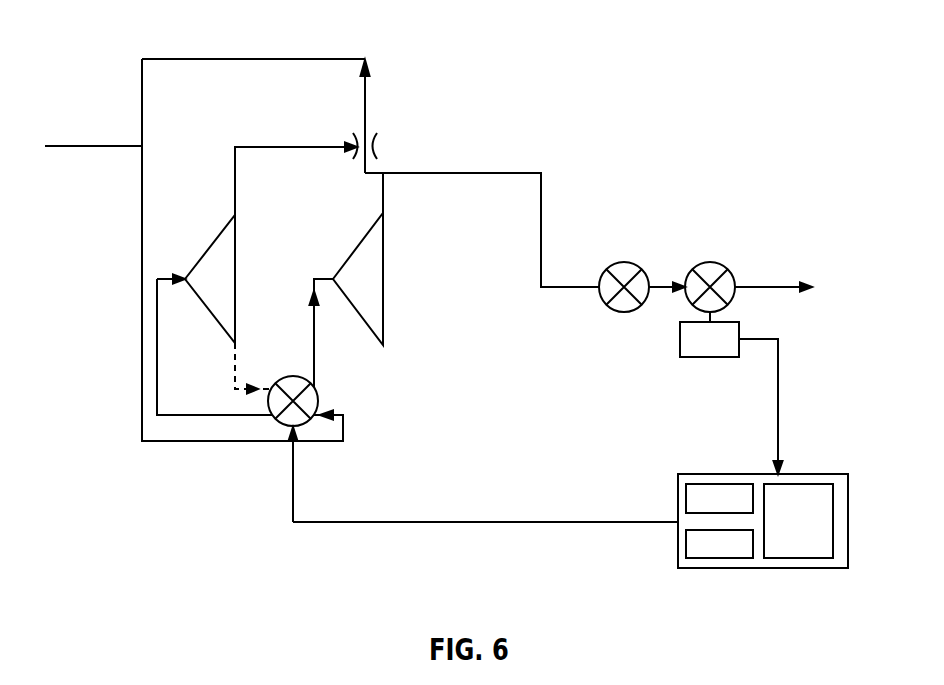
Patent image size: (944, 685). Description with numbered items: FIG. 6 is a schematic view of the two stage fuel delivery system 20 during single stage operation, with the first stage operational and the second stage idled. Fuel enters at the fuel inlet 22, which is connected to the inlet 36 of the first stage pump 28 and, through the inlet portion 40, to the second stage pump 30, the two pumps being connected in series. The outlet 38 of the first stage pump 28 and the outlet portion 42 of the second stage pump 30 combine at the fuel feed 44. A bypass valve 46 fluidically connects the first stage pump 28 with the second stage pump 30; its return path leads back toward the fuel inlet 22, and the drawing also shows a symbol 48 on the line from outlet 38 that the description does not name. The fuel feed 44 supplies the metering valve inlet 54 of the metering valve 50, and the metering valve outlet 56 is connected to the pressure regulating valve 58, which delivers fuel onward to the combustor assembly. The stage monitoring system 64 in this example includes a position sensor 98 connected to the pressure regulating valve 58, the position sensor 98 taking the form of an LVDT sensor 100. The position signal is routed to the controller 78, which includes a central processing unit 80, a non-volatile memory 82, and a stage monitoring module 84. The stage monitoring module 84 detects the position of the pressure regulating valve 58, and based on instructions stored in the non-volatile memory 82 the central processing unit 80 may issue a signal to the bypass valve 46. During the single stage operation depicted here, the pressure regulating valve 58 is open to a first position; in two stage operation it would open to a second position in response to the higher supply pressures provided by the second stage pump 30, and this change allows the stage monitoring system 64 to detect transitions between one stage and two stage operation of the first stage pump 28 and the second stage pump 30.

The two stage fuel delivery system 20 is at (198, 34).
The fuel inlet 22 is at (54, 182).
The first stage pump 28 is at (200, 347).
The second stage pump 30 is at (403, 292).
The inlet 36 is at (125, 362).
The outlet 38 is at (275, 183).
The inlet portion 40 is at (352, 377).
The outlet portion 42 is at (423, 208).
The fuel feed 44 is at (473, 137).
The bypass valve 46 is at (257, 470).
The flow restriction 48 is at (412, 128).
The metering valve 50 is at (598, 230).
The metering valve inlet 54 is at (530, 325).
The metering valve outlet 56 is at (680, 250).
The pressure regulating valve 58 is at (738, 233).
The stage monitoring system 64 is at (792, 365).
The controller 78 is at (665, 561).
The central processing unit 80 is at (798, 580).
The non-volatile memory 82 is at (737, 453).
The stage monitoring module 84 is at (695, 580).
The position sensor 98 is at (673, 410).
The LVDT sensor 100 is at (645, 358).